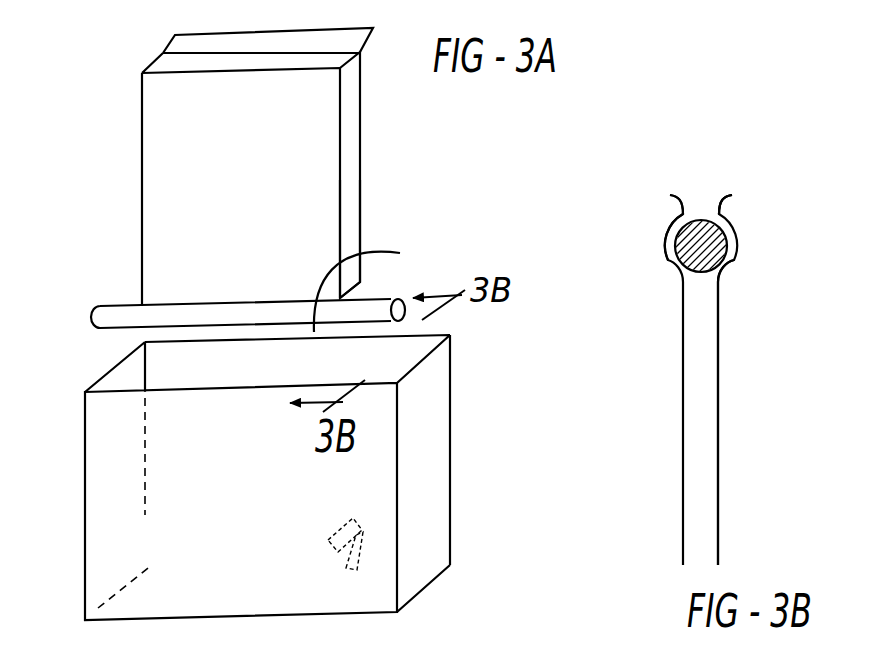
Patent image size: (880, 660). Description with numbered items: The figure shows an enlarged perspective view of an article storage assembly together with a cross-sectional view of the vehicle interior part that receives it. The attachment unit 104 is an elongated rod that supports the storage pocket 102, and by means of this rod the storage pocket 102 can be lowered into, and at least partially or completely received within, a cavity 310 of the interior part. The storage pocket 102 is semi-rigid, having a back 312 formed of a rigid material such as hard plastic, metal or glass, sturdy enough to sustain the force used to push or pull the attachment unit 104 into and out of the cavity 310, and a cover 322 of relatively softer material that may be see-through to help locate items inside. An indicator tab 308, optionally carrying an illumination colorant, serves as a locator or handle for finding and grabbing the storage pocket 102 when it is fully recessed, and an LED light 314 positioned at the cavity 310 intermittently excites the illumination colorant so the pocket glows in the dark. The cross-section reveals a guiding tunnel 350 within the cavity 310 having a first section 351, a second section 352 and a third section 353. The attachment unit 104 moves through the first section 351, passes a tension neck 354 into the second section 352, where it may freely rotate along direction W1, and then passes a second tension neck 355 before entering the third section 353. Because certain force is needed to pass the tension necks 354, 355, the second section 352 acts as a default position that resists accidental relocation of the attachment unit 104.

In FIG. 3A, the storage pocket 102 is at (213, 168).
In FIG. 3A, the attachment unit 104 is at (124, 313).
In FIG. 3B, the attachment unit 104 is at (702, 255).
In FIG. 3A, the indicator tab 308 is at (188, 45).
In FIG. 3A, the back 312 is at (363, 167).
In FIG. 3A, the cover 322 is at (329, 238).
In FIG. 3A, the direction of rotation W1 is at (376, 285).
In FIG. 3A, the cavity 310 is at (183, 535).
In FIG. 3A, the LED light 314 is at (341, 553).
In FIG. 3B, the guiding tunnel 350 is at (672, 412).
In FIG. 3B, the first section 351 is at (701, 200).
In FIG. 3B, the second section 352 is at (652, 248).
In FIG. 3B, the third section 353 is at (730, 393).
In FIG. 3B, the tension neck 354 is at (730, 208).
In FIG. 3B, the second tension neck 355 is at (724, 286).